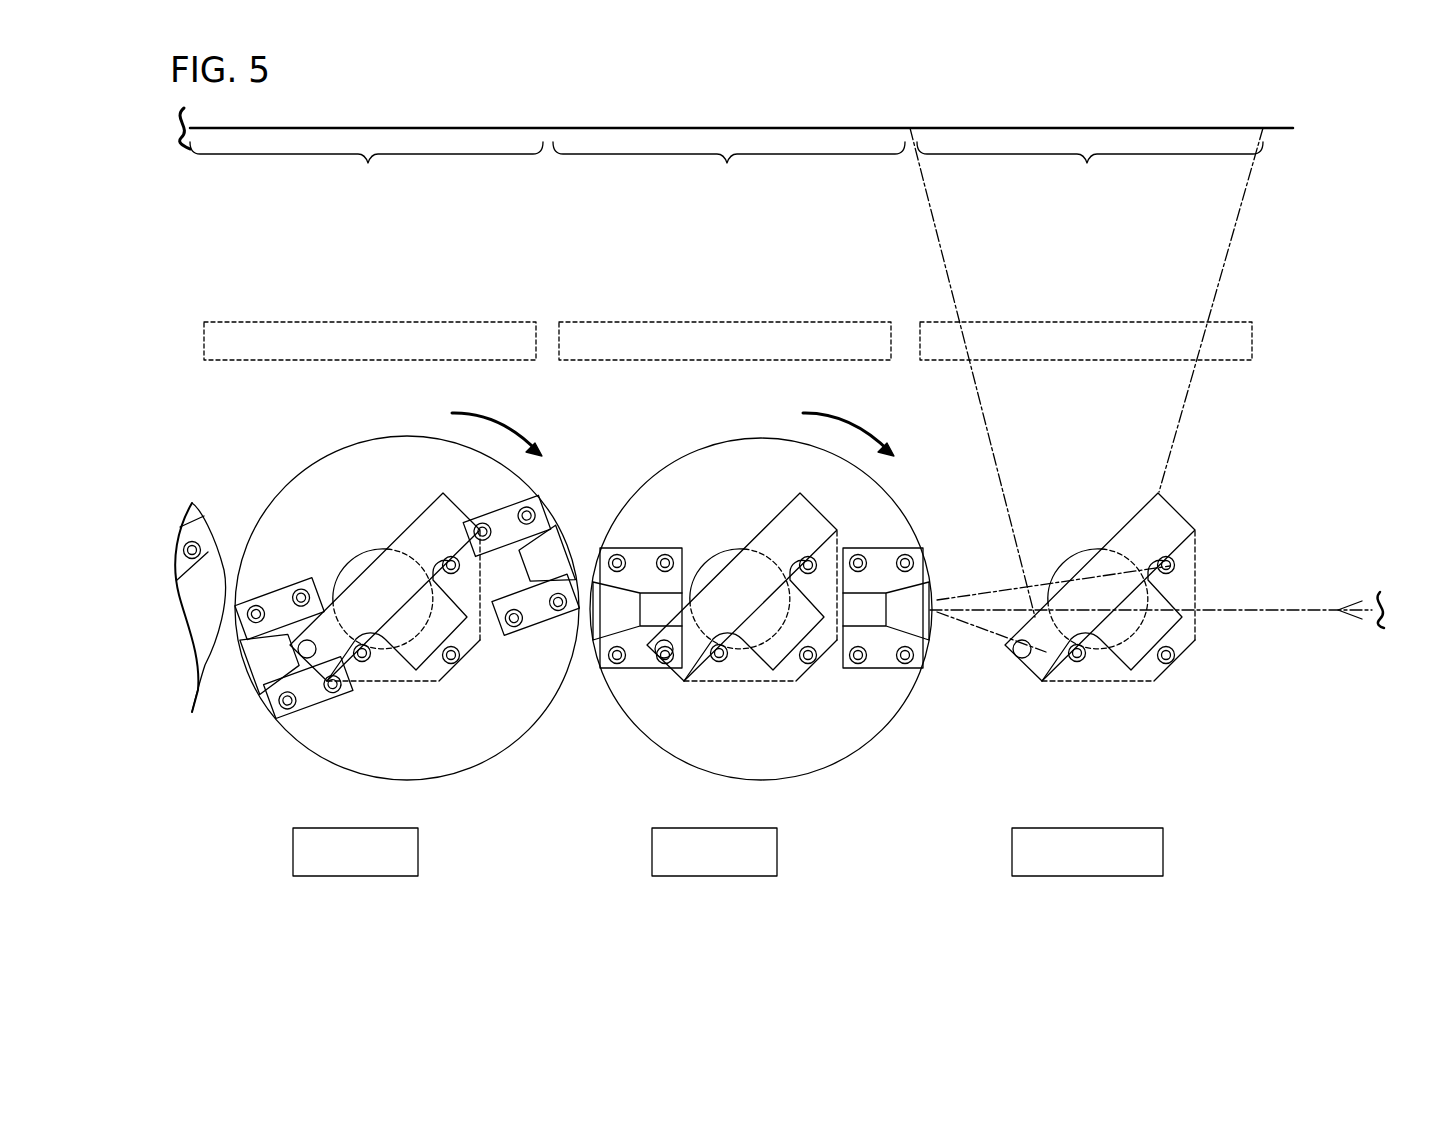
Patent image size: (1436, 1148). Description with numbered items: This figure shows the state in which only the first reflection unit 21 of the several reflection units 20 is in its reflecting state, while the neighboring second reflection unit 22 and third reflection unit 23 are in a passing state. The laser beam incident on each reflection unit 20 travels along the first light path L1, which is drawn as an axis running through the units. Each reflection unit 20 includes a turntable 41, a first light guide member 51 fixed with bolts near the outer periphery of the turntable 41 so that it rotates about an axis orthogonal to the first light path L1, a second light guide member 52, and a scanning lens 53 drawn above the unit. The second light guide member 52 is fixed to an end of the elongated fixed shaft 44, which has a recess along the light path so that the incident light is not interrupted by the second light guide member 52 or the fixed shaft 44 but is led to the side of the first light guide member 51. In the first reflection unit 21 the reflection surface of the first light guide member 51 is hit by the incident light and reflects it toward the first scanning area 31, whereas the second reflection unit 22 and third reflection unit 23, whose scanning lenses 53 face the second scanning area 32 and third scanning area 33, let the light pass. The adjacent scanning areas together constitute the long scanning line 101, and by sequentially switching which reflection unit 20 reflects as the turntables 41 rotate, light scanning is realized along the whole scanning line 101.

The scanning line 101 is at (1285, 133).
The third scanning area 33 is at (366, 174).
The second scanning area 32 is at (729, 174).
The first scanning area 31 is at (1090, 174).
The scanning lens 53 is at (421, 322).
The first light path L1 is at (1253, 613).
The turntable 41 is at (801, 765).
The first light guide member 51 is at (207, 520).
The fixed shaft 44 is at (368, 550).
The second light guide member 52 is at (425, 520).
The reflection unit 20 is at (684, 823).
The third reflection unit 23 is at (484, 708).
The second reflection unit 22 is at (838, 708).
The first reflection unit 21 is at (1198, 711).